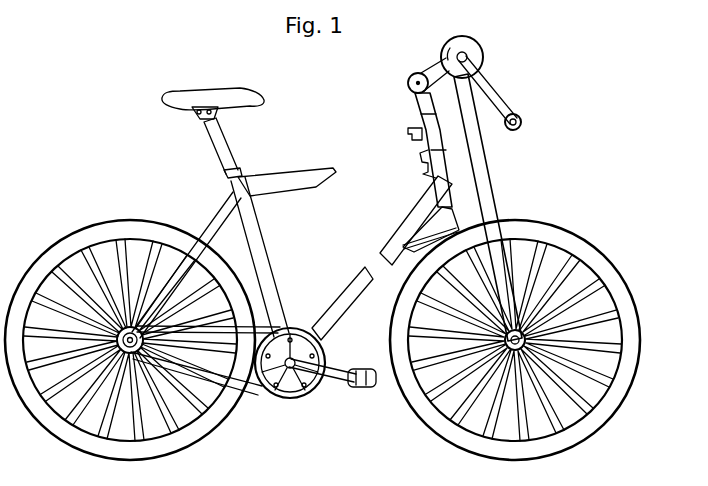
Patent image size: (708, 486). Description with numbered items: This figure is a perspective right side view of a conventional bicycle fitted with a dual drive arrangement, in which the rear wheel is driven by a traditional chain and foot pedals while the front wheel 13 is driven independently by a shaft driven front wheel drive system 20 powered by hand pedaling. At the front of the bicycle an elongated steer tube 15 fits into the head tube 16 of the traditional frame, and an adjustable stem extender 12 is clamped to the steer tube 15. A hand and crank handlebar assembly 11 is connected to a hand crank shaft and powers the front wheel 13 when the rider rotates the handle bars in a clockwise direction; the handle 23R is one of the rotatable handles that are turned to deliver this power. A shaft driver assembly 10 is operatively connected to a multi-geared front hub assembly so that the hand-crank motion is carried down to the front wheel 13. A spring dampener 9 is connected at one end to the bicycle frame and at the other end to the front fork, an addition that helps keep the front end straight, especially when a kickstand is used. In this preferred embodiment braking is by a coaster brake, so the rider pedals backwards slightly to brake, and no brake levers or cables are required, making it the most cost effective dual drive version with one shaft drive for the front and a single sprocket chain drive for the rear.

The spring dampener 9 is at (291, 243).
The shaft driver assembly 10 is at (490, 48).
The hand and crank handlebar assembly 11 is at (507, 87).
The adjustable stem extender 12 is at (400, 89).
The front wheel 13 is at (612, 268).
The elongated steer tube 15 is at (418, 126).
The head tube 16 is at (420, 158).
The shaft driven front wheel drive system 20 is at (500, 182).
The handle 23R is at (521, 127).